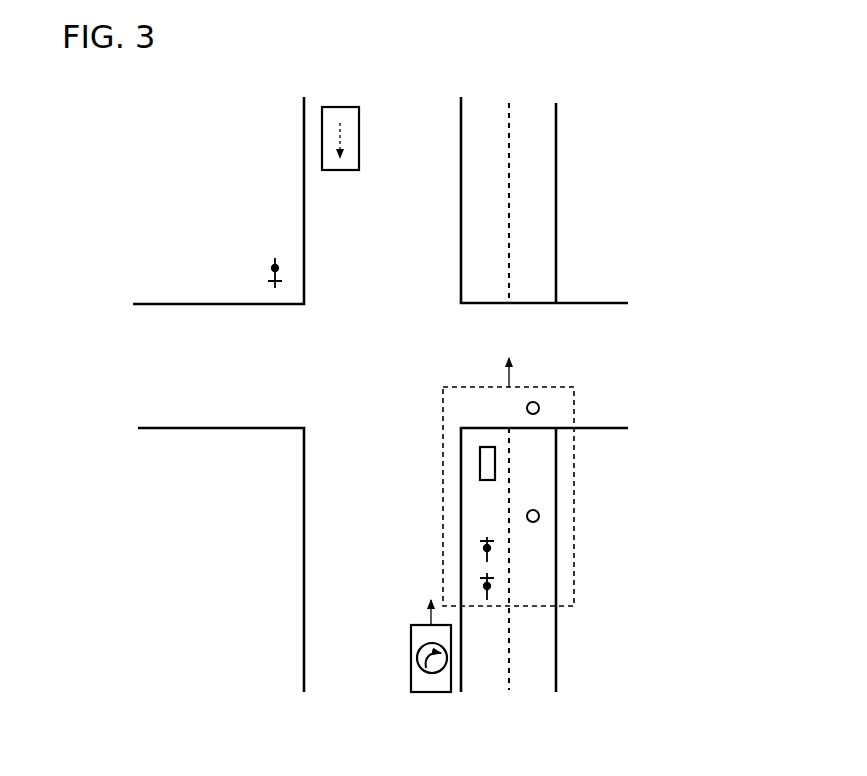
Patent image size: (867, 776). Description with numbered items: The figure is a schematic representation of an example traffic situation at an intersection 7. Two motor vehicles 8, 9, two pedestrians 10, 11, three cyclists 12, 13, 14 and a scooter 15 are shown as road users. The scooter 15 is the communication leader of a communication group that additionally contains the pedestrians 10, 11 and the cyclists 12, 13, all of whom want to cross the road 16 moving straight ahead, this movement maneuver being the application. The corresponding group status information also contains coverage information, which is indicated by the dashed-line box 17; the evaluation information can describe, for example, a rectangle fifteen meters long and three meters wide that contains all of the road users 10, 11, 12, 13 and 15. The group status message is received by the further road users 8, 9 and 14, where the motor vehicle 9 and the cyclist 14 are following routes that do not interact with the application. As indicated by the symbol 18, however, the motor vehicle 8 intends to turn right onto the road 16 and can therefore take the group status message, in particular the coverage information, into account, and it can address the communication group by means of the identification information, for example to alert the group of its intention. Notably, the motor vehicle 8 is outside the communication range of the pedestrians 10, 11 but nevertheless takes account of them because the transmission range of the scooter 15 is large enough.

The intersection 7 is at (393, 377).
The motor vehicle 8 is at (430, 695).
The motor vehicle 9 is at (359, 136).
The pedestrian 10 is at (540, 405).
The pedestrian 11 is at (540, 514).
The cyclist 12 is at (459, 549).
The cyclist 13 is at (459, 583).
The cyclist 14 is at (255, 271).
The scooter 15 is at (477, 463).
The road 16 is at (687, 375).
The dashed-line box 17 is at (575, 484).
The symbol 18 is at (420, 651).